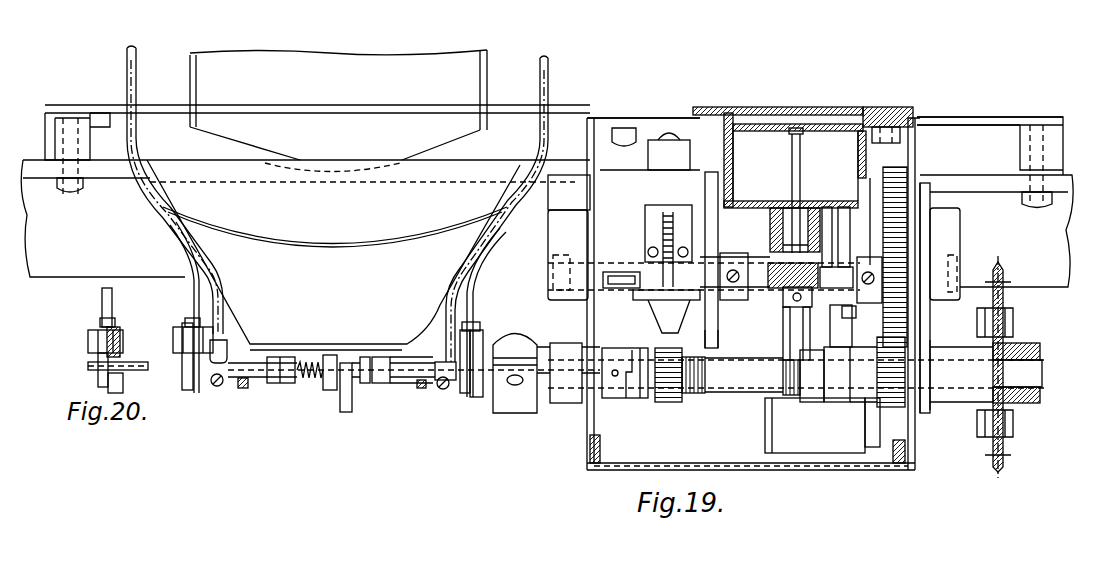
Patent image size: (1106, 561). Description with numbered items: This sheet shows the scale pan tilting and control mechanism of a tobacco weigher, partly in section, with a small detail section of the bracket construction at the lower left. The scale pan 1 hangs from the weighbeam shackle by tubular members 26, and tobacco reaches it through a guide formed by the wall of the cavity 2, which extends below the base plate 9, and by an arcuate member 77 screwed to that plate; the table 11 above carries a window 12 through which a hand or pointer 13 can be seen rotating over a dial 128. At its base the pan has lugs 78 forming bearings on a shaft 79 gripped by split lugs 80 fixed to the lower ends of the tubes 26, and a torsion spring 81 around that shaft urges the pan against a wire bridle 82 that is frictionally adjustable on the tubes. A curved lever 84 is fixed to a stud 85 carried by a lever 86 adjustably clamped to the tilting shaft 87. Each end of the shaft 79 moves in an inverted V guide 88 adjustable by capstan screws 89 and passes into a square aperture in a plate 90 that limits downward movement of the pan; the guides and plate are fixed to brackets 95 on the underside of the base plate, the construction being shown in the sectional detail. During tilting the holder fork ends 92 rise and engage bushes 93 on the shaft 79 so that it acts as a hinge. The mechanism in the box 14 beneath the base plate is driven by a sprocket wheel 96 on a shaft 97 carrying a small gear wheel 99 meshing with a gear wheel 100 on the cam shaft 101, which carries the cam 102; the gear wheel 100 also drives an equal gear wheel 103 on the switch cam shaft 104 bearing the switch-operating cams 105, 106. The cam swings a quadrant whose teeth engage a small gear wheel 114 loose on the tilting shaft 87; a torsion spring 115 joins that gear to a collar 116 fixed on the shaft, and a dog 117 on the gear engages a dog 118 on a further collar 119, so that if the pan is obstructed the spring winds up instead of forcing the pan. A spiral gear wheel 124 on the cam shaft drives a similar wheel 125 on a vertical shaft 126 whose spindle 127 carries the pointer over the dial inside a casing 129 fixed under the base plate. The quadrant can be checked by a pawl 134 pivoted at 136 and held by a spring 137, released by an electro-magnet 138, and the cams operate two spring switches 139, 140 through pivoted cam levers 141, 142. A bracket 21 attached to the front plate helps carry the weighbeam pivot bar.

In FIG. 19, the scale pan 1 is at (488, 170).
In FIG. 19, the cavity 2 is at (453, 78).
In FIG. 19, the base plate 9 is at (967, 116).
In FIG. 19, the table 11 is at (877, 109).
In FIG. 19, the window 12 is at (828, 113).
In FIG. 19, the hand or pointer 13 is at (775, 124).
In FIG. 19, the box 14 is at (920, 210).
In FIG. 19, the bracket 21 is at (600, 110).
In FIG. 19, the tubular members 26 is at (131, 58).
In FIG. 19, the arcuate member 77 is at (428, 145).
In FIG. 19, the lugs 78 is at (290, 388).
In FIG. 19, the shaft 79 is at (198, 387).
In FIG. 20, the shaft 79 is at (98, 358).
In FIG. 19, the split lugs 80 is at (448, 397).
In FIG. 19, the torsion spring 81 is at (368, 358).
In FIG. 19, the wire bridle 82 is at (392, 242).
In FIG. 19, the curved lever 84 is at (348, 412).
In FIG. 19, the stud 85 is at (407, 397).
In FIG. 19, the lever 86 is at (515, 405).
In FIG. 19, the tilting shaft 87 is at (568, 386).
In FIG. 19, the inverted V guide 88 is at (472, 398).
In FIG. 20, the inverted V guide 88 is at (118, 382).
In FIG. 19, the capstan screws 89 is at (477, 327).
In FIG. 20, the capstan screws 89 is at (115, 322).
In FIG. 19, the plate 90 is at (175, 352).
In FIG. 20, the plate 90 is at (98, 385).
In FIG. 19, the holder fork ends 92 is at (248, 388).
In FIG. 19, the bushes 93 is at (245, 363).
In FIG. 19, the brackets 95 is at (175, 255).
In FIG. 20, the brackets 95 is at (100, 303).
In FIG. 19, the sprocket wheel 96 is at (1002, 445).
In FIG. 19, the shaft 97 is at (1030, 372).
In FIG. 19, the small gear wheel 99 is at (890, 407).
In FIG. 19, the gear wheel 100 is at (898, 330).
In FIG. 19, the cam shaft 101 is at (958, 243).
In FIG. 19, the cam 102 is at (712, 342).
In FIG. 19, the gear wheel 103 is at (905, 180).
In FIG. 19, the switch cam shaft 104 is at (702, 213).
In FIG. 19, the switch-operating cam 105 is at (792, 315).
In FIG. 19, the switch-operating cam 106 is at (845, 312).
In FIG. 19, the small gear wheel 114 is at (673, 400).
In FIG. 19, the torsion spring 115 is at (695, 393).
In FIG. 19, the collar 116 is at (812, 402).
In FIG. 19, the dog 117 is at (632, 402).
In FIG. 19, the dog 118 is at (628, 382).
In FIG. 19, the collar 119 is at (613, 393).
In FIG. 19, the spiral gear wheel 124 is at (823, 253).
In FIG. 19, the spiral gear wheel 125 is at (770, 300).
In FIG. 19, the vertical shaft 126 is at (815, 212).
In FIG. 19, the spindle 127 is at (797, 163).
In FIG. 19, the dial 128 is at (852, 132).
In FIG. 19, the casing 129 is at (747, 202).
In FIG. 19, the pawl 134 is at (658, 313).
In FIG. 19, the pivot 136 is at (633, 293).
In FIG. 19, the spring 137 is at (663, 242).
In FIG. 19, the electro-magnet 138 is at (650, 160).
In FIG. 19, the spring switch 139 is at (800, 447).
In FIG. 19, the spring switch 140 is at (845, 447).
In FIG. 19, the cam lever 141 is at (792, 343).
In FIG. 19, the cam lever 142 is at (842, 342).